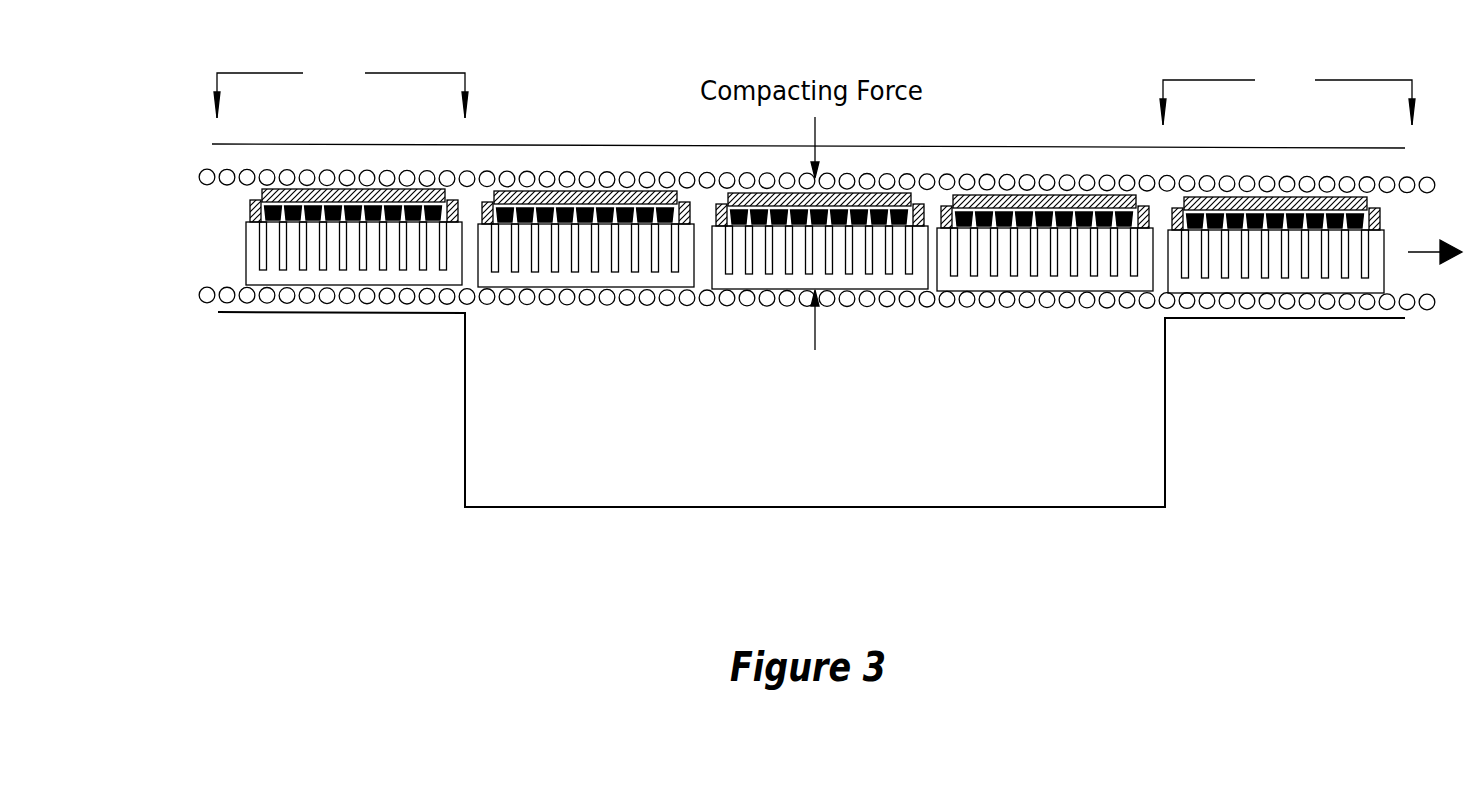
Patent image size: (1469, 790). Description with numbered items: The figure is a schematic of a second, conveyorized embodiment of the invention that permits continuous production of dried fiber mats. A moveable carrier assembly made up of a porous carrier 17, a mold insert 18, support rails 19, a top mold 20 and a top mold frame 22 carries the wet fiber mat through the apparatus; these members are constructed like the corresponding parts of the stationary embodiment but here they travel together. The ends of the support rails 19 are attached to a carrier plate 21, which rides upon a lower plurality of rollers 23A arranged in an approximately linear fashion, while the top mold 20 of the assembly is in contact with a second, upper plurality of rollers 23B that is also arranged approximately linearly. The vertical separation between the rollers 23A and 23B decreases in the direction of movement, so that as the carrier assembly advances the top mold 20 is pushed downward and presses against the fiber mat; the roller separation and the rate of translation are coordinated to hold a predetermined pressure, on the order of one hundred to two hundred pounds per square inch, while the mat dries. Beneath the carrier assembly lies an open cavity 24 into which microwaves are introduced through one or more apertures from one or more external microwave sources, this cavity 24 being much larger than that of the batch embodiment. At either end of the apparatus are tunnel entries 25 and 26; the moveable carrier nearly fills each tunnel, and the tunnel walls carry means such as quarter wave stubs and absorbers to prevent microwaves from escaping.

The porous carrier 17 is at (277, 233).
The mold insert 18 is at (248, 213).
The support rails 19 is at (285, 257).
The top mold 20 is at (424, 140).
The carrier plate 21 is at (331, 312).
The top mold frame 22 is at (534, 165).
The rollers 23A is at (769, 317).
The rollers 23B is at (203, 173).
The open cavity 24 is at (811, 409).
The tunnel entry 25 is at (341, 88).
The tunnel entry 26 is at (1287, 94).